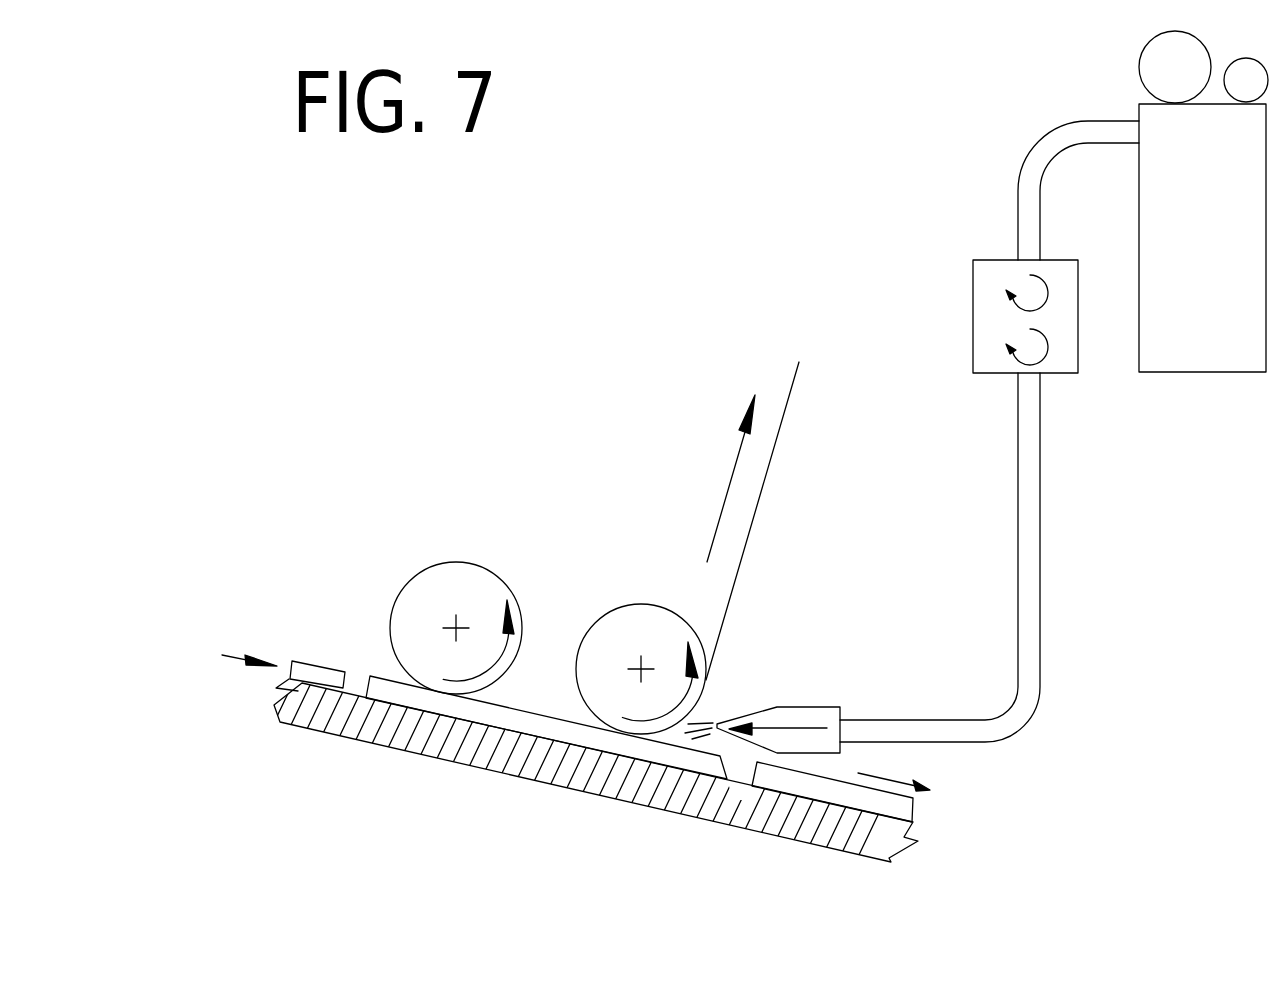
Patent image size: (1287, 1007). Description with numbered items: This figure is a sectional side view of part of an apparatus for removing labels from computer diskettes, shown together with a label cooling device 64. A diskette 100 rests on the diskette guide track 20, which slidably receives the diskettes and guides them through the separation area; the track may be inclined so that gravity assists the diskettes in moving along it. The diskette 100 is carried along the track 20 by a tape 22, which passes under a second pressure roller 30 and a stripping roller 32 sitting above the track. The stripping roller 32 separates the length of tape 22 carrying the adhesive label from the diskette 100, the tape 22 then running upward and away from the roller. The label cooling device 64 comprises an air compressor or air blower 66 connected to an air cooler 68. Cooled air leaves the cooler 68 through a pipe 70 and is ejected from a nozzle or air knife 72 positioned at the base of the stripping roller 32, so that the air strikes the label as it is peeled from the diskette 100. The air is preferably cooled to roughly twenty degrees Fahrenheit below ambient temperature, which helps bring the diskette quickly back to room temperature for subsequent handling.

The diskette guide track 20 is at (548, 770).
The tape 22 is at (702, 460).
The second pressure roller 30 is at (407, 547).
The stripping roller 32 is at (607, 564).
The label cooling device 64 is at (1037, 140).
The air compressor or air blower 66 is at (1192, 276).
The air cooler 68 is at (981, 261).
The pipe 70 is at (1026, 557).
The nozzle or air knife 72 is at (954, 761).
The diskette 100 is at (736, 769).